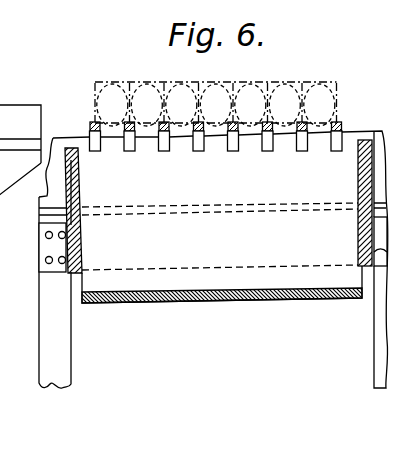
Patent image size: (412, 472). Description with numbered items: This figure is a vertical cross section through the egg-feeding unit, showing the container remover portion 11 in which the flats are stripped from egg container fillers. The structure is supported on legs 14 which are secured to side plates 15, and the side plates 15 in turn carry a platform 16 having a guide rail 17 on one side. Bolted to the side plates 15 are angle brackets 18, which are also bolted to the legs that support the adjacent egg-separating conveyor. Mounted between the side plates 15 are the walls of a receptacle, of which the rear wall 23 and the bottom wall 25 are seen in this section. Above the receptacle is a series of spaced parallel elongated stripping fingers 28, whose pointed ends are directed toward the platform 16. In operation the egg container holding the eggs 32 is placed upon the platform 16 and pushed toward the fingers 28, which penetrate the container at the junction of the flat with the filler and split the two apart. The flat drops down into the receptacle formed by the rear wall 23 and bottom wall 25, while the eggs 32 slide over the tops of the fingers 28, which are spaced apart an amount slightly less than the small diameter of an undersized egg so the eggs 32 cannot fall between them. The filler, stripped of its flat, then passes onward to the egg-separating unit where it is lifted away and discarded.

The container remover portion 11 is at (354, 90).
The legs 14 is at (44, 368).
The side plates 15 is at (81, 238).
The platform 16 is at (27, 140).
The guide rail 17 is at (1, 112).
The angle brackets 18 is at (46, 251).
The rear wall 23 is at (220, 236).
The bottom wall 25 is at (201, 298).
The stripping fingers 28 is at (135, 134).
The eggs 32 is at (191, 81).